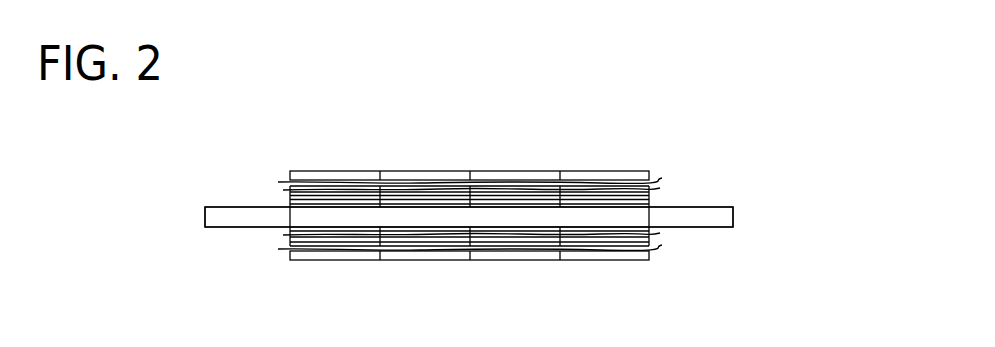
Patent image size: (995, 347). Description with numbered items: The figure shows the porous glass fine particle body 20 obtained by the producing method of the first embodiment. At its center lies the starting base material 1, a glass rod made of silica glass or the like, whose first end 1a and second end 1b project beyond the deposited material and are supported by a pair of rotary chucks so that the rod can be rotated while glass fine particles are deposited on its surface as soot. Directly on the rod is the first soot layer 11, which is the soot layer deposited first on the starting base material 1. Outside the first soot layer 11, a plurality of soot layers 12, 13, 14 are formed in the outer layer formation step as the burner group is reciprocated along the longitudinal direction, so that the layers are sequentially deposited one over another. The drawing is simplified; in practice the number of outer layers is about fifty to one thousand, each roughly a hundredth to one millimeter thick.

The starting base material 1 is at (714, 232).
The first end 1a is at (205, 212).
The second end 1b is at (735, 215).
The first soot layer 11 is at (652, 203).
The soot layer 12 is at (652, 195).
The soot layer 13 is at (652, 190).
The soot layer 14 is at (655, 188).
The porous glass fine particle body 20 is at (481, 180).